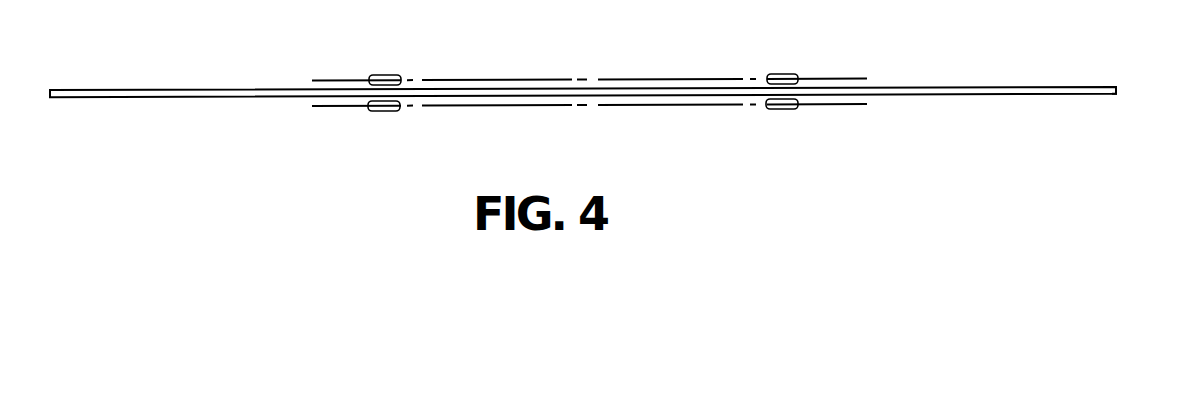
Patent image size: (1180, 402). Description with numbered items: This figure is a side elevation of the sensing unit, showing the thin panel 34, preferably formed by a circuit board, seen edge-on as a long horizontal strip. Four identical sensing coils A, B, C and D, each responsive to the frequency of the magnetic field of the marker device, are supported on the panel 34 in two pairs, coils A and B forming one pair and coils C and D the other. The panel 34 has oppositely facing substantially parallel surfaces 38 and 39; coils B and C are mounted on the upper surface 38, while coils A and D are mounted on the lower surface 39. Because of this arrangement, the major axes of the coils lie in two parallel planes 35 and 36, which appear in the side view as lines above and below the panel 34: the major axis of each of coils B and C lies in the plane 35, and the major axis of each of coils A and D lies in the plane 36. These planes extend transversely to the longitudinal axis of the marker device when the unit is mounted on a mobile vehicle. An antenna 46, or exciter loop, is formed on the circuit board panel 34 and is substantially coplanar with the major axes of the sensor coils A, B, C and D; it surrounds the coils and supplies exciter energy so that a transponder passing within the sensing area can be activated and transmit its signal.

The panel 34 is at (912, 87).
The parallel plane 35 is at (502, 78).
The parallel plane 36 is at (497, 108).
The panel surface 38 is at (602, 82).
The panel surface 39 is at (602, 100).
The antenna 46 is at (1116, 91).
The sensing coil A is at (378, 112).
The sensing coil B is at (387, 75).
The sensing coil C is at (782, 73).
The sensing coil D is at (782, 110).